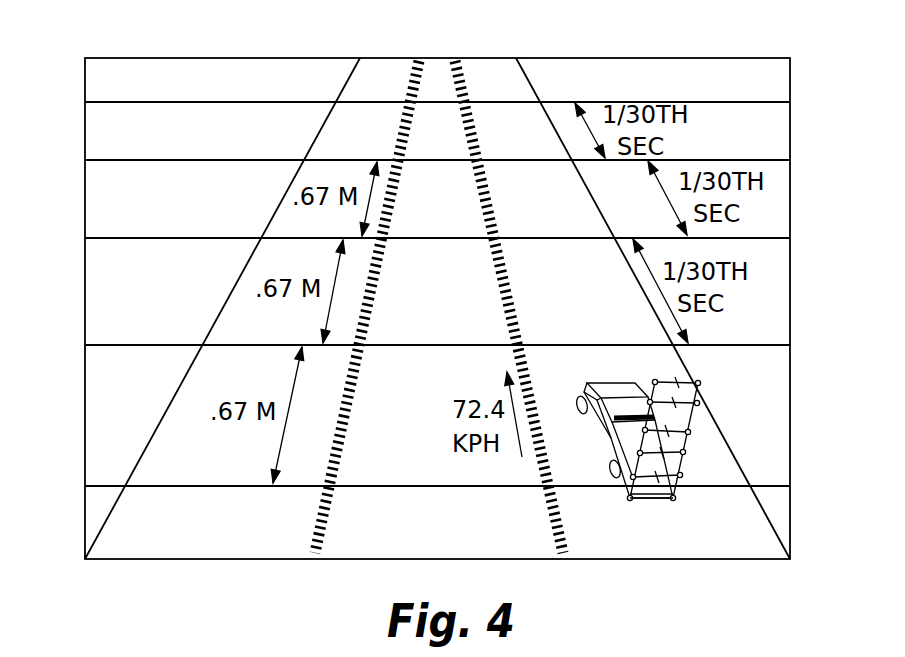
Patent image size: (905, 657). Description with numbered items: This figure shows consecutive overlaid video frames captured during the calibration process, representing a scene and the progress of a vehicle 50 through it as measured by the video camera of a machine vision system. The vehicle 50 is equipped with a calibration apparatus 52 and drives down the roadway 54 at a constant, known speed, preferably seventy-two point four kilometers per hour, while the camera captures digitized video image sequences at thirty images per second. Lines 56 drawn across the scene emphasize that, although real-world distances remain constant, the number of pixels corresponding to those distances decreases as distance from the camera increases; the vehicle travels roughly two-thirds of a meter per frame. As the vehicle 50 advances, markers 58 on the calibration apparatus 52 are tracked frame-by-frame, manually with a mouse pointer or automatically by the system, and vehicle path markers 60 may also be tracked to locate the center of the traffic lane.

The vehicle 50 is at (602, 384).
The calibration apparatus 52 is at (708, 392).
The roadway 54 is at (440, 69).
The lines 56 is at (143, 345).
The markers 58 is at (674, 501).
The vehicle path markers 60 is at (658, 476).